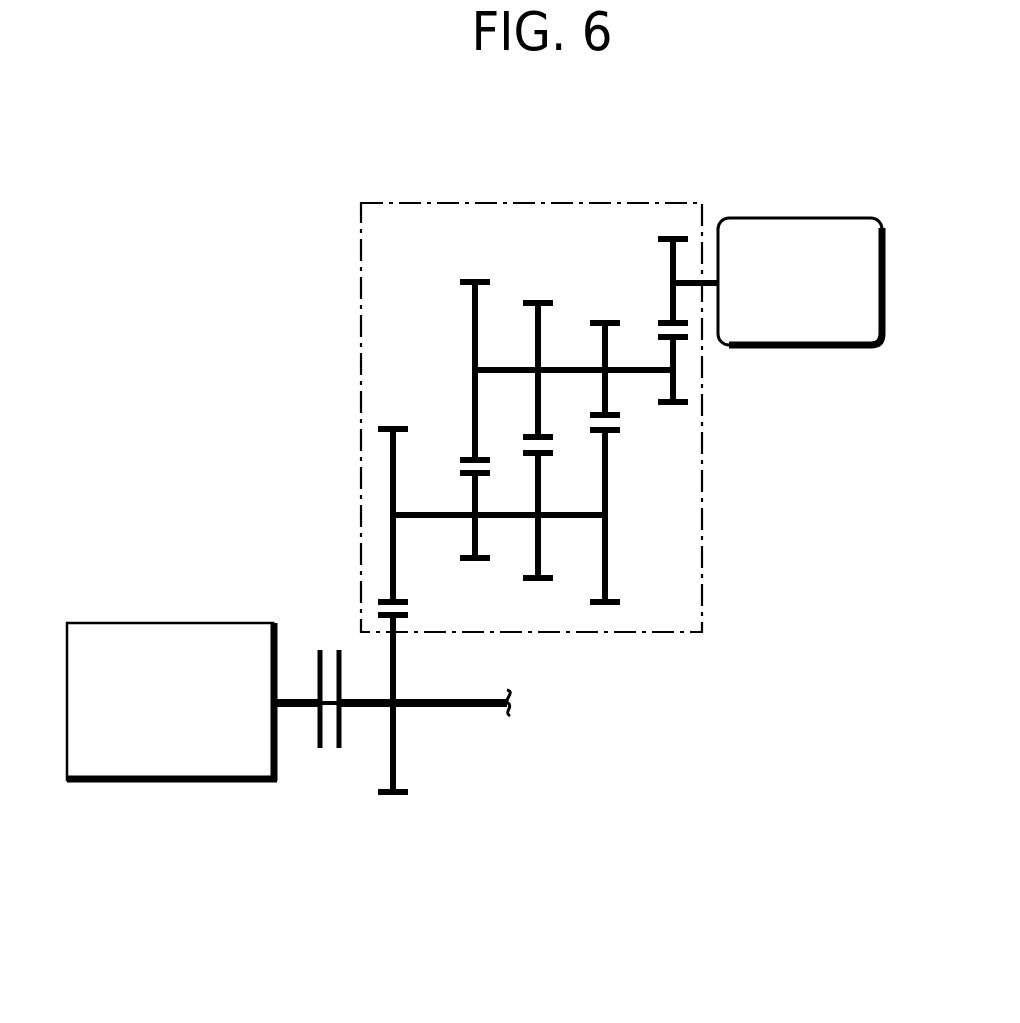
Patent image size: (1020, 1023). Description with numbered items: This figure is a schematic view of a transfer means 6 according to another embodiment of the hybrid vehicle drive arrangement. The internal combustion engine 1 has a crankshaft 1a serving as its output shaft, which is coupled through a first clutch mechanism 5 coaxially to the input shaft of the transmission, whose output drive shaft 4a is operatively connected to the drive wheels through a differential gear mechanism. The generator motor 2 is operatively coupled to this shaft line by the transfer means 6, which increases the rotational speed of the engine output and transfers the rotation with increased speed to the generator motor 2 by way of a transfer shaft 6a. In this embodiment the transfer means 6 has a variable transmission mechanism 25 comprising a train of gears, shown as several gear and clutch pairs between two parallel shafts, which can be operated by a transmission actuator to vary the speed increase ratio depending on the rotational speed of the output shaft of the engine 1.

The internal combustion engine 1 is at (145, 622).
The crankshaft 1a is at (300, 710).
The first clutch mechanism 5 is at (318, 657).
The output drive shaft 4a is at (465, 708).
The transfer means 6 is at (703, 530).
The variable transmission mechanism 25 is at (505, 426).
The transfer shaft 6a is at (691, 273).
The generator motor 2 is at (808, 218).